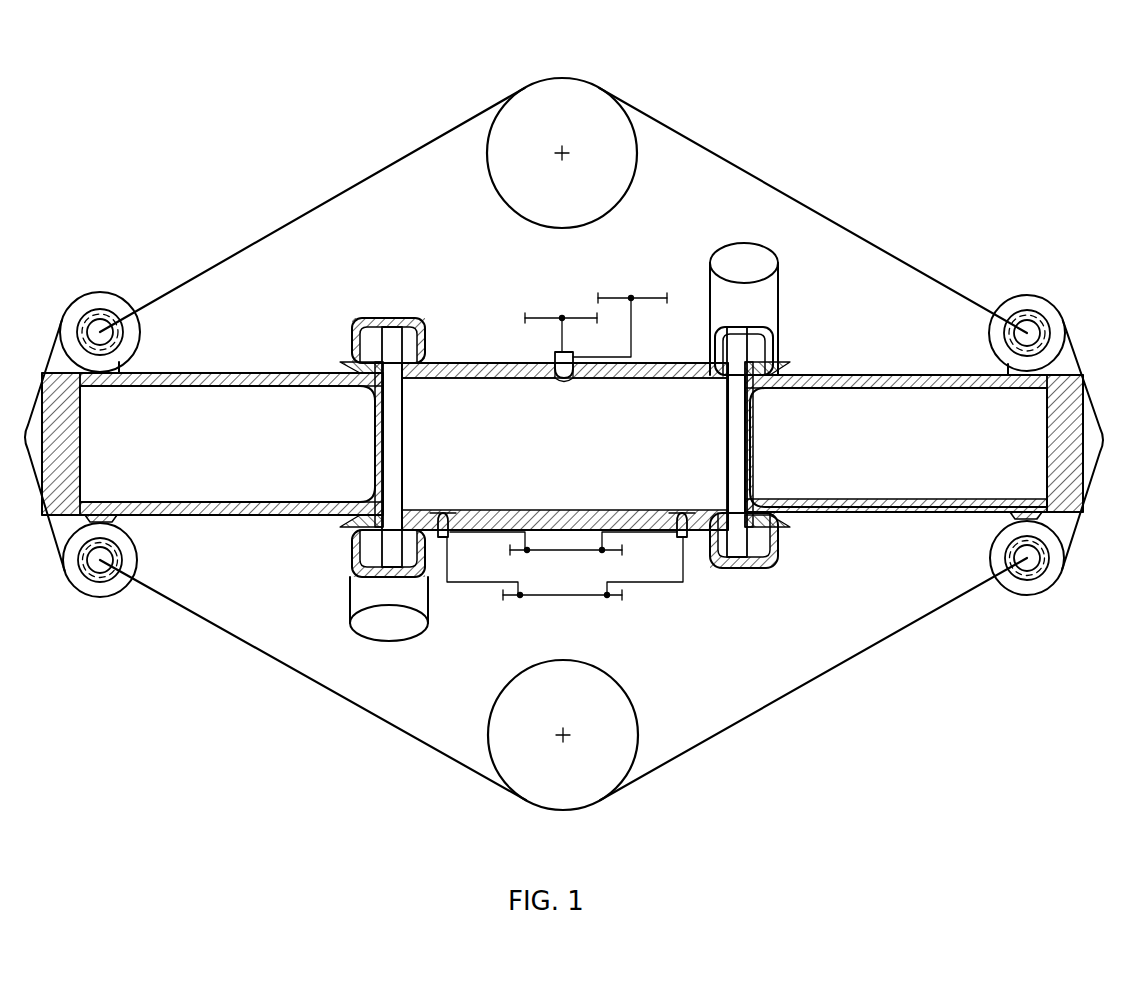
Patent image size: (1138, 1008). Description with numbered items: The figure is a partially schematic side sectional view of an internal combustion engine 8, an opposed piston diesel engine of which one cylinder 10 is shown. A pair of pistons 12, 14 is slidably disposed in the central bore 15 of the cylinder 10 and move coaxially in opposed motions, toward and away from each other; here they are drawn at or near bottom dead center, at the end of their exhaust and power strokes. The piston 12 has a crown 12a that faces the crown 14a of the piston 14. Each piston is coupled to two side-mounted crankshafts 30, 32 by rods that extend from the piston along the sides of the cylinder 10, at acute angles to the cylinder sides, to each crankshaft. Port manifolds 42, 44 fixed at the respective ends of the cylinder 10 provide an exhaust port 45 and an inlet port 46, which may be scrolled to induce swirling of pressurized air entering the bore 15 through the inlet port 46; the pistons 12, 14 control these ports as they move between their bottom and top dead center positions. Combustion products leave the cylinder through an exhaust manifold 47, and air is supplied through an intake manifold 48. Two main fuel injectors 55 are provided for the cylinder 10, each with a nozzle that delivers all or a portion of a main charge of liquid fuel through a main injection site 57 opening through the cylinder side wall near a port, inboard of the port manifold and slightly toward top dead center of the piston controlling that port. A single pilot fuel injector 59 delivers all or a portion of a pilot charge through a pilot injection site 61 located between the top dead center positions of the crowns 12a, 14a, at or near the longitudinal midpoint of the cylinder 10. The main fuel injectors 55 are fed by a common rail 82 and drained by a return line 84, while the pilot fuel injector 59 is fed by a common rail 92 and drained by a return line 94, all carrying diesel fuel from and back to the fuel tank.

The internal combustion engine 8 is at (817, 130).
The cylinder 10 is at (650, 357).
The piston 12 is at (188, 373).
The crown 12a is at (388, 442).
The piston 14 is at (945, 375).
The crown 14a is at (750, 440).
The central bore 15 is at (478, 387).
The crankshaft 30 is at (562, 78).
The crankshaft 32 is at (597, 805).
The port manifold 42 is at (387, 315).
The port manifold 44 is at (745, 565).
The exhaust port 45 is at (388, 387).
The inlet port 46 is at (725, 393).
The exhaust manifold 47 is at (385, 643).
The intake manifold 48 is at (747, 243).
The main fuel injector 55 is at (455, 513).
The main injection site 57 is at (445, 517).
The pilot fuel injector 59 is at (573, 373).
The pilot injection site 61 is at (558, 380).
The common rail 82 is at (540, 600).
The return line 84 is at (540, 555).
The common rail 92 is at (532, 315).
The return line 94 is at (603, 295).